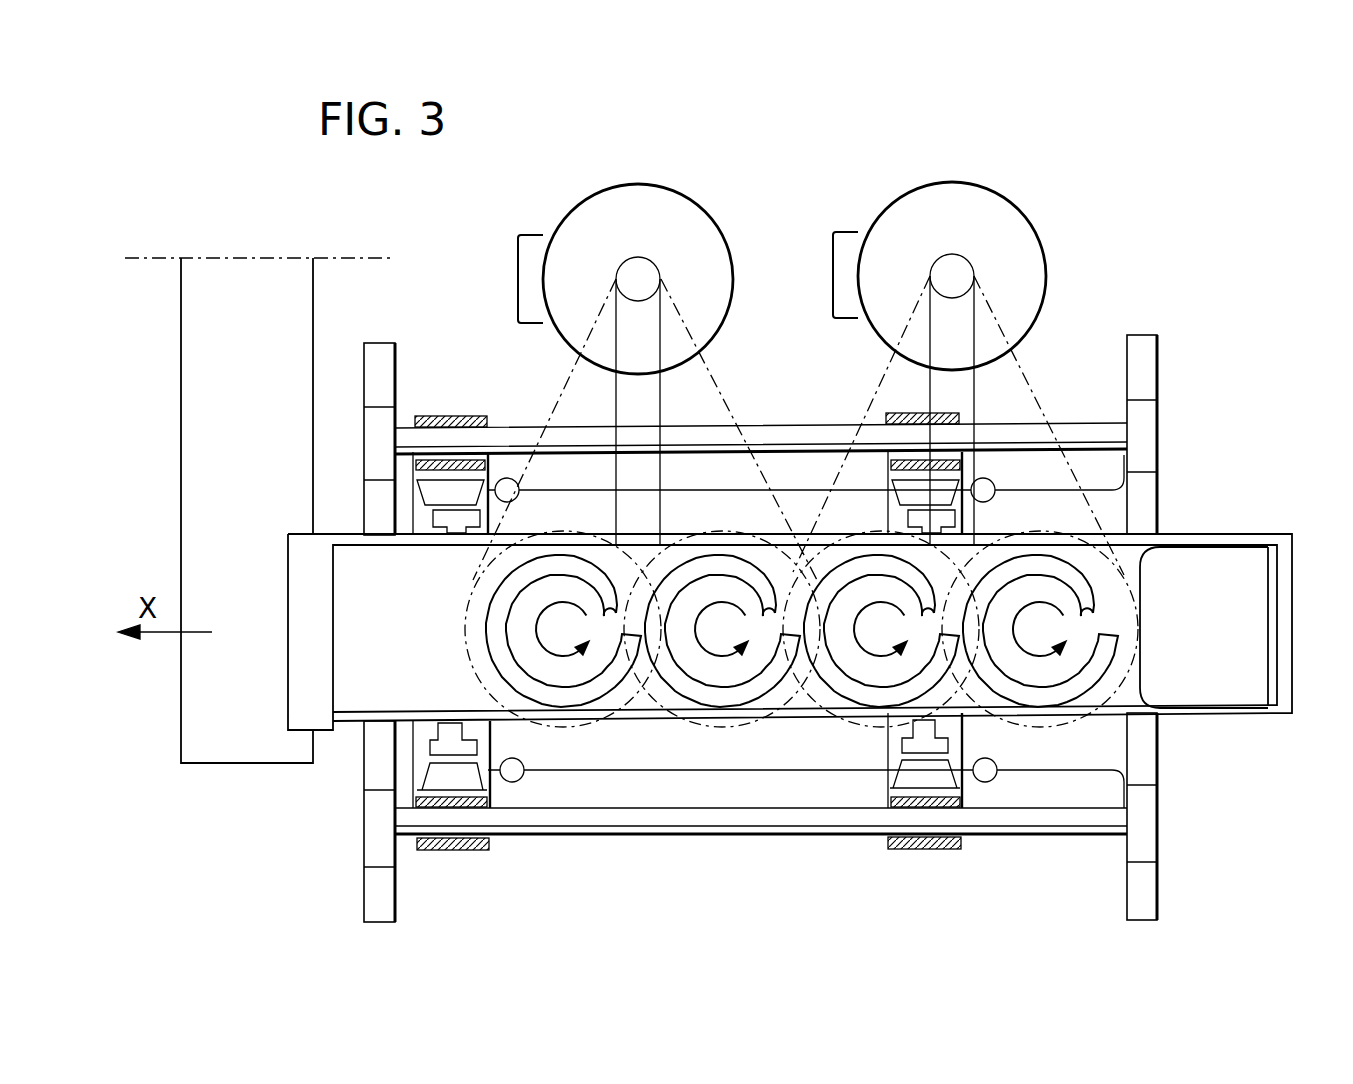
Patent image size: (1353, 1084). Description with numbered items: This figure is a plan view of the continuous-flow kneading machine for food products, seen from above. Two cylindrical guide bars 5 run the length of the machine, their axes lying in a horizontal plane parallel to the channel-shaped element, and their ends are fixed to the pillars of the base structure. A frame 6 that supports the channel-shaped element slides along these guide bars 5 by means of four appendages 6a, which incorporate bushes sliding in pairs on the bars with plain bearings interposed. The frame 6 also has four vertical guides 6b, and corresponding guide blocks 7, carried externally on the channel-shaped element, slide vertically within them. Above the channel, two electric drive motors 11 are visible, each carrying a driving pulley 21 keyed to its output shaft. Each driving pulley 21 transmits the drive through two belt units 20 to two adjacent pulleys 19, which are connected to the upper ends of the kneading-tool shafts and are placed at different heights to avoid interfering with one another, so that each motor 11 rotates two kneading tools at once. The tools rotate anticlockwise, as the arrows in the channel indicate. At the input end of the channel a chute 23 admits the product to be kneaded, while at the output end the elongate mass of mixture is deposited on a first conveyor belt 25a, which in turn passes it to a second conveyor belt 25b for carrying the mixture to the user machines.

The cylindrical guide bars 5 is at (713, 426).
The frame 6 is at (472, 418).
The appendages 6a is at (432, 415).
The vertical guides 6b is at (430, 517).
The guide blocks 7 is at (456, 532).
The electric drive motors 11 is at (670, 205).
The pulleys 19 is at (645, 522).
The belt units 20 is at (755, 460).
The driving pulley 21 is at (650, 277).
The chute 23 is at (1240, 548).
The first conveyor belt 25a is at (322, 712).
The second conveyor belt 25b is at (240, 272).